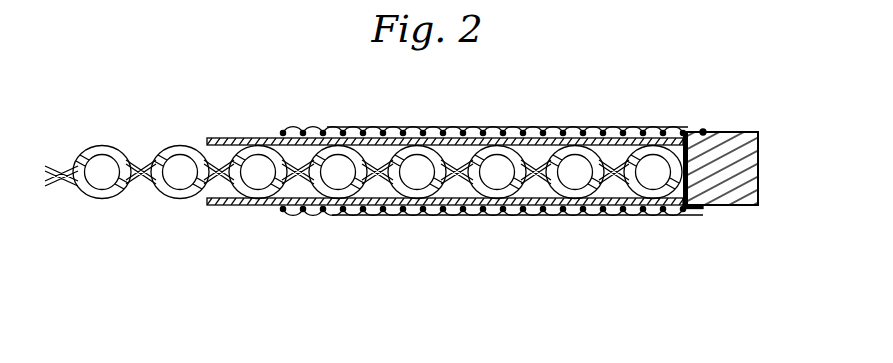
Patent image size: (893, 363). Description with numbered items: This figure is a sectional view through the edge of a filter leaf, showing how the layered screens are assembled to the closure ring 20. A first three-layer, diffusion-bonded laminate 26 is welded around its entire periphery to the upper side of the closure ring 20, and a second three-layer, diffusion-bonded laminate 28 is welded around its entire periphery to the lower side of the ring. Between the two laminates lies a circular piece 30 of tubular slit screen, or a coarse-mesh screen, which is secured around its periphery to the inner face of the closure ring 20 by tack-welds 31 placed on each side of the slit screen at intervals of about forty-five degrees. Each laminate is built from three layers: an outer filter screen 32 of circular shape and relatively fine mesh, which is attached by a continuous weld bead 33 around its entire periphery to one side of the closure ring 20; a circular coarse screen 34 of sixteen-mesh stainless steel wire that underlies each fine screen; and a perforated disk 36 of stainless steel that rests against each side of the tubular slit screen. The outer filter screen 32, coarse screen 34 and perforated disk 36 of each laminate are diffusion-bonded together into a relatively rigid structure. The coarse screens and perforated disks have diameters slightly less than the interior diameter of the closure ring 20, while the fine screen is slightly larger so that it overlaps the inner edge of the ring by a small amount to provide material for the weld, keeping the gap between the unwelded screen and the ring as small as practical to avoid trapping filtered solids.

The closure ring 20 is at (758, 178).
The first three-layer diffusion-bonded laminate 26 is at (376, 122).
The second three-layer diffusion-bonded laminate 28 is at (430, 224).
The circular piece of tubular slit screen 30 is at (181, 199).
The tack-welds 31 is at (684, 134).
The outer filter screen 32 is at (518, 128).
The continuous weld bead 33 is at (704, 131).
The coarse screen 34 is at (431, 130).
The perforated disk 36 is at (617, 126).